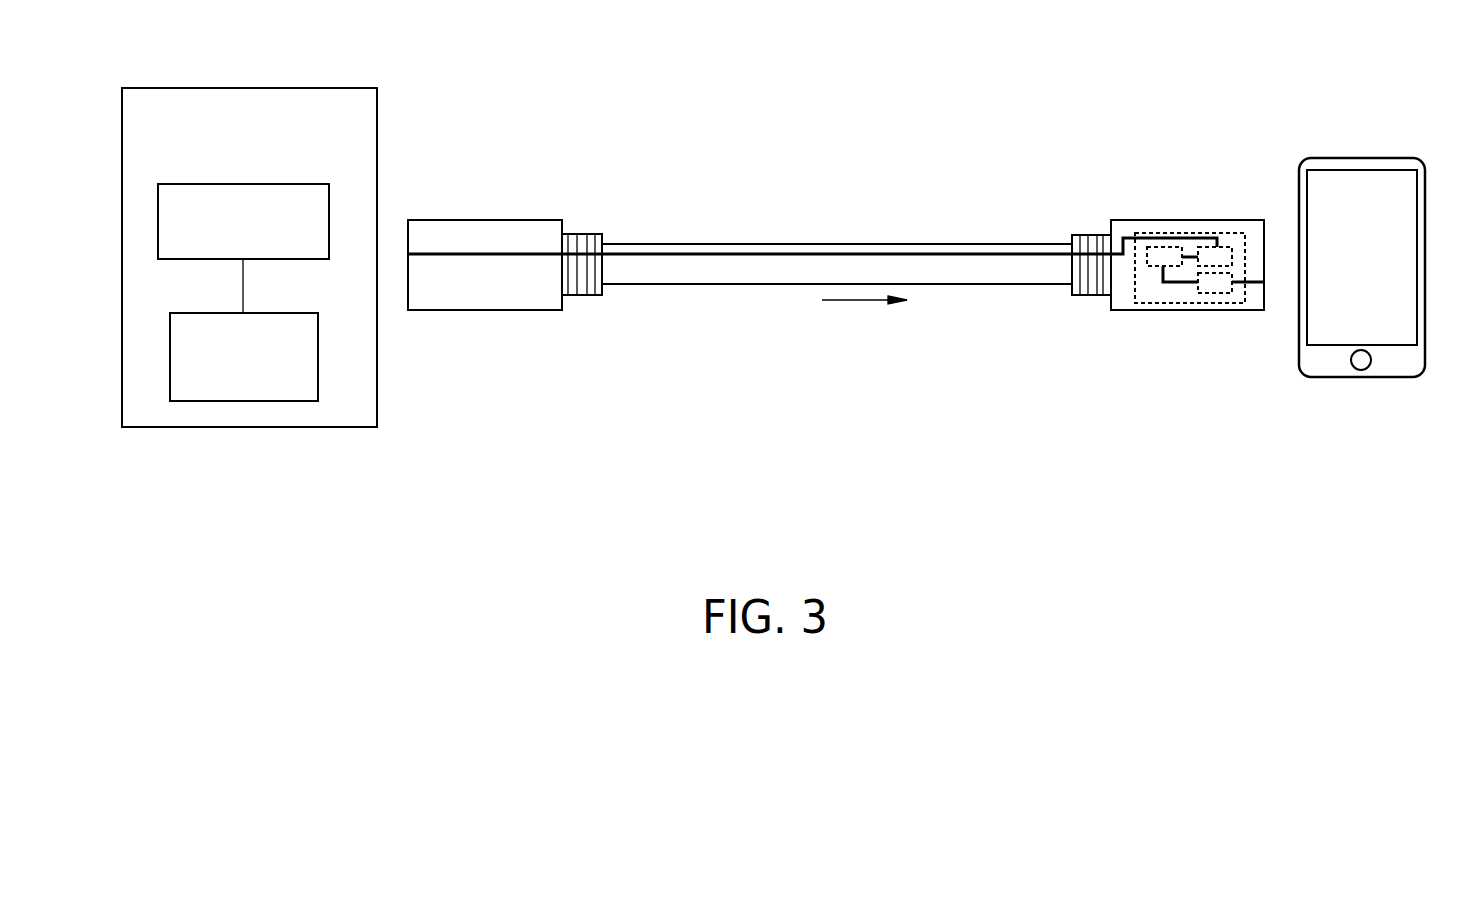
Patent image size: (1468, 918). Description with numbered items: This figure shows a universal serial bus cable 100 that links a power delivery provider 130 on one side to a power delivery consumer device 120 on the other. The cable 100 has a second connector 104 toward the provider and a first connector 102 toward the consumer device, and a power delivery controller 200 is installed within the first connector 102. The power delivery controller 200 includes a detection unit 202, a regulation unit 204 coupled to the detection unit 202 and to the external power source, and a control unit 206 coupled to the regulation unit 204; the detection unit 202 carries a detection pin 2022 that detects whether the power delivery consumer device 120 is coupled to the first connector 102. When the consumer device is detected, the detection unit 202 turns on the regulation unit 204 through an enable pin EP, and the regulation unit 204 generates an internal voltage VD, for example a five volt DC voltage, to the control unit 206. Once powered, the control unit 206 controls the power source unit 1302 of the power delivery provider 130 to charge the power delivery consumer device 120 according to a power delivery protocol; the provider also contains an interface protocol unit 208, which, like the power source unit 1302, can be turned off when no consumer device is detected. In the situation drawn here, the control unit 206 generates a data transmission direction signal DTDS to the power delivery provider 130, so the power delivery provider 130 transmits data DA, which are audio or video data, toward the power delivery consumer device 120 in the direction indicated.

The universal serial bus (USB) cable 100 is at (925, 110).
The first connector 102 is at (1111, 224).
The second connector 104 is at (475, 220).
The power delivery consumer device 120 is at (1353, 158).
The power delivery provider 130 is at (245, 88).
The interface protocol unit 208 is at (212, 184).
The power source unit 1302 is at (220, 313).
The power delivery controller 200 is at (1148, 303).
The detection unit 202 is at (1208, 293).
The detection pin 2022 is at (1253, 287).
The regulation unit 204 is at (1148, 247).
The control unit 206 is at (1220, 247).
The data transmission direction signal DTDS is at (1167, 235).
The internal voltage VD is at (1188, 256).
The enable pin EP is at (1162, 277).
The data DA is at (864, 312).